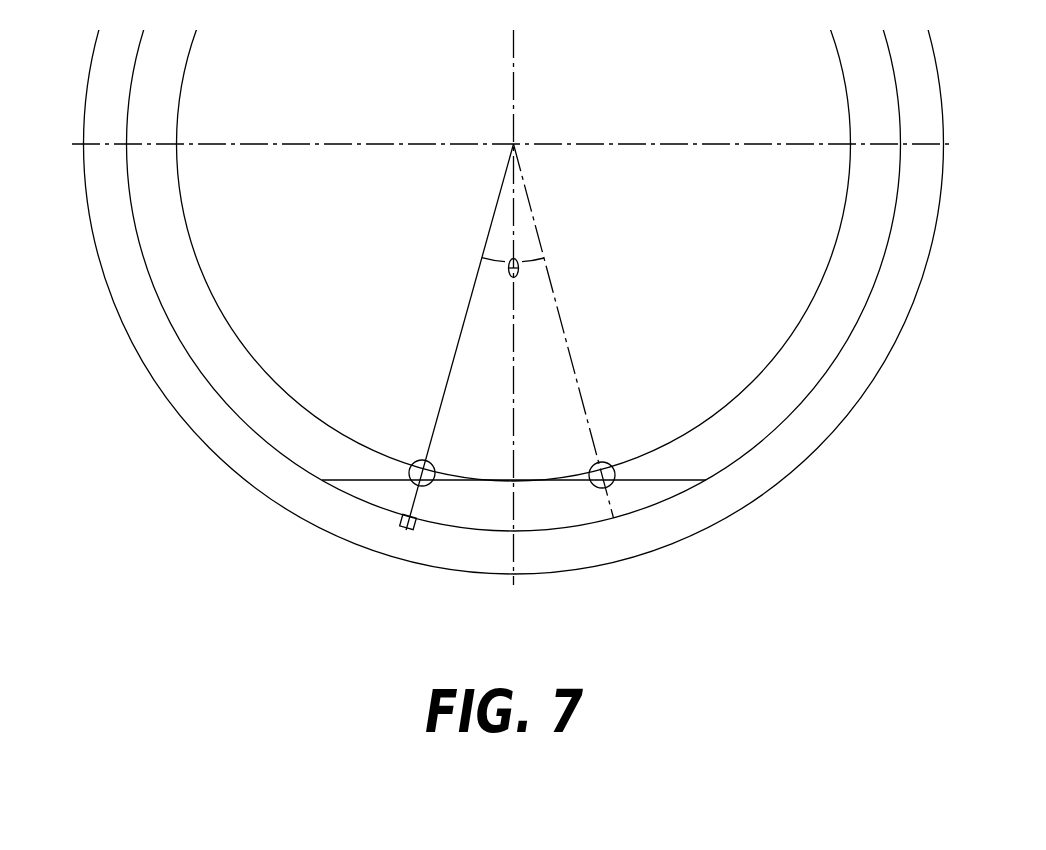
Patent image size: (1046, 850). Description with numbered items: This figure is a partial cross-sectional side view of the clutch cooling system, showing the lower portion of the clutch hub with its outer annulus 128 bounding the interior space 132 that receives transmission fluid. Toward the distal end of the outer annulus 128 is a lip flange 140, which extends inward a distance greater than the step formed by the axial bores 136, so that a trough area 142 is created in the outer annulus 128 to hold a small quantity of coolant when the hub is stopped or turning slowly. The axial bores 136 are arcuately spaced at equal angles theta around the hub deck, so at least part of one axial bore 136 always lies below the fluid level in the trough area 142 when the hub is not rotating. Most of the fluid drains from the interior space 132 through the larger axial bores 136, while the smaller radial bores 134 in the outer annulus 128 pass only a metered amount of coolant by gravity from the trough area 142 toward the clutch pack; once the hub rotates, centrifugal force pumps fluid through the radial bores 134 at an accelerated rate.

The outer annulus 128 is at (175, 334).
The interior space 132 is at (326, 288).
The radial bores 134 is at (402, 533).
The axial bores 136 is at (614, 484).
The lip flange 140 is at (765, 379).
The trough area 142 is at (499, 518).